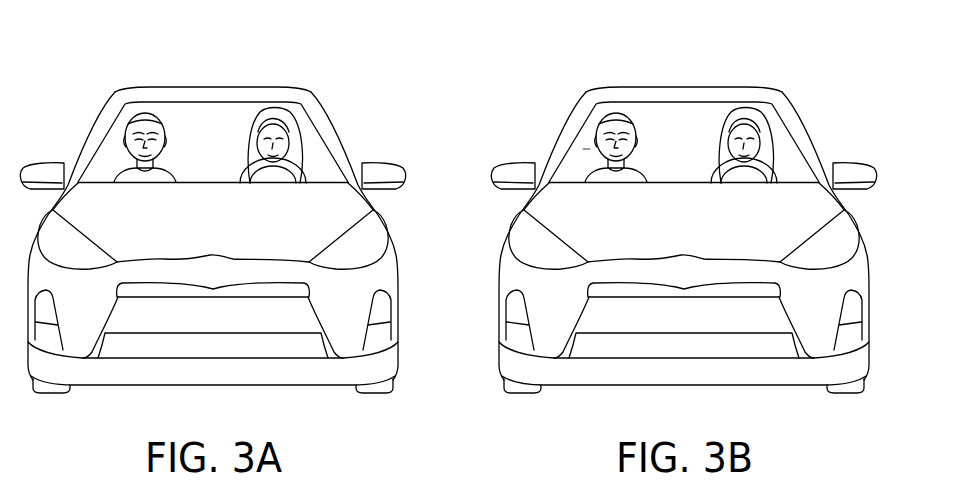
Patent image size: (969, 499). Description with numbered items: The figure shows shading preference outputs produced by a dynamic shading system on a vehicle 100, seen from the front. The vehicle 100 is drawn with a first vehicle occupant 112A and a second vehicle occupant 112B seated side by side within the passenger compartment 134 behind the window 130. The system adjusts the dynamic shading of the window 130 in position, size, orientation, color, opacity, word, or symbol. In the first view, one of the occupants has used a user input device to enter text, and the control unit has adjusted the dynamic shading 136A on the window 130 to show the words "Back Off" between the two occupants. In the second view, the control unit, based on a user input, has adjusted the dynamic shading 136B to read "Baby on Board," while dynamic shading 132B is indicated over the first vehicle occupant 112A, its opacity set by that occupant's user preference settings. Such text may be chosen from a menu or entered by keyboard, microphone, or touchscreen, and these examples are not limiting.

In FIG. 3A, the vehicle 100 is at (88, 97).
In FIG. 3B, the vehicle 100 is at (683, 198).
In FIG. 3A, the first vehicle occupant 112A is at (147, 113).
In FIG. 3B, the first vehicle occupant 112A is at (622, 117).
In FIG. 3A, the second vehicle occupant 112B is at (273, 111).
In FIG. 3B, the second vehicle occupant 112B is at (748, 118).
In FIG. 3A, the window 130 is at (321, 116).
In FIG. 3B, the window 130 is at (701, 132).
In FIG. 3B, the dynamic shading 132B is at (538, 131).
In FIG. 3A, the passenger compartment 134 is at (328, 155).
In FIG. 3B, the passenger compartment 134 is at (705, 153).
In FIG. 3A, the dynamic shading 136A is at (193, 108).
In FIG. 3B, the dynamic shading 136B is at (680, 118).